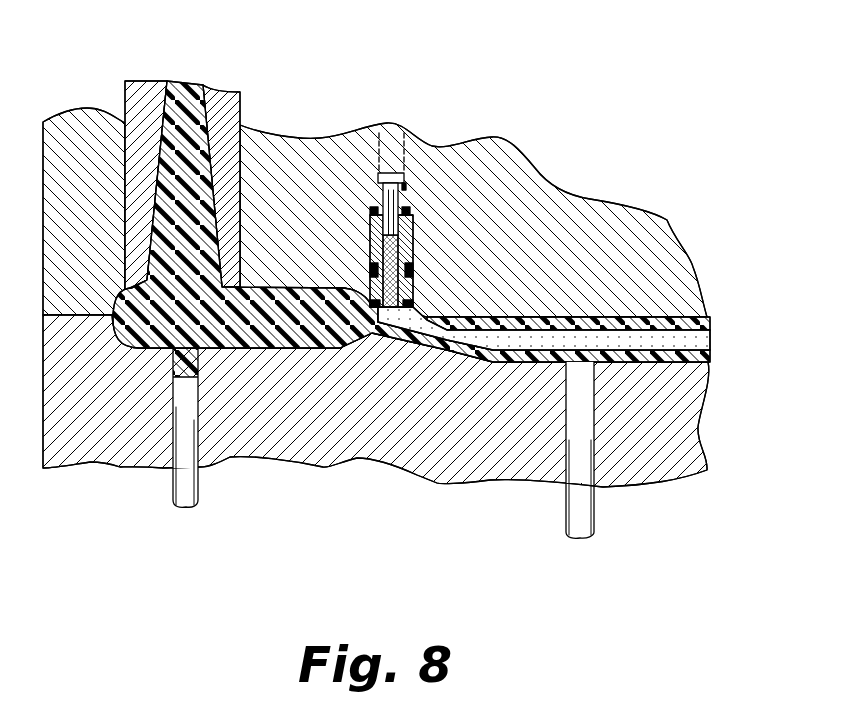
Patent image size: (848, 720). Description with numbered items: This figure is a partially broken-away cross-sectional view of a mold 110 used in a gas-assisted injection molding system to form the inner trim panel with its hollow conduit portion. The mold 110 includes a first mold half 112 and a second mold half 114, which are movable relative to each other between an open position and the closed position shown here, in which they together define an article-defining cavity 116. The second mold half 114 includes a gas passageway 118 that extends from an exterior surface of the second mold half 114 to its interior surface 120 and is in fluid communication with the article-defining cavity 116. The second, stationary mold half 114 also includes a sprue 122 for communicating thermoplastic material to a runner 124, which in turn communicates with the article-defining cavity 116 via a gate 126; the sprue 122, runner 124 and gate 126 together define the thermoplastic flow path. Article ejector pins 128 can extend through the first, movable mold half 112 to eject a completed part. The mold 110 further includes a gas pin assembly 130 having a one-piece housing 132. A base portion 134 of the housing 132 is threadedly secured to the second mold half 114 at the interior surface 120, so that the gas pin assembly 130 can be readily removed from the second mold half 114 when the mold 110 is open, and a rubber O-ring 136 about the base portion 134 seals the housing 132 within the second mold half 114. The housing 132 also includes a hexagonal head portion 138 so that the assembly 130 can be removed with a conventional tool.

The mold 110 is at (426, 293).
The first mold half 112 is at (700, 410).
The second mold half 114 is at (680, 240).
The article-defining cavity 116 is at (593, 313).
The gas passageway 118 is at (380, 133).
The interior surface 120 is at (418, 232).
The sprue 122 is at (243, 103).
The runner 124 is at (297, 350).
The gate 126 is at (440, 332).
The article ejector pins 128 is at (200, 477).
The gas pin assembly 130 is at (414, 272).
The housing 132 is at (418, 252).
The base portion 134 is at (408, 207).
The rubber O-ring 136 is at (404, 212).
The hexagonal head portion 138 is at (415, 285).